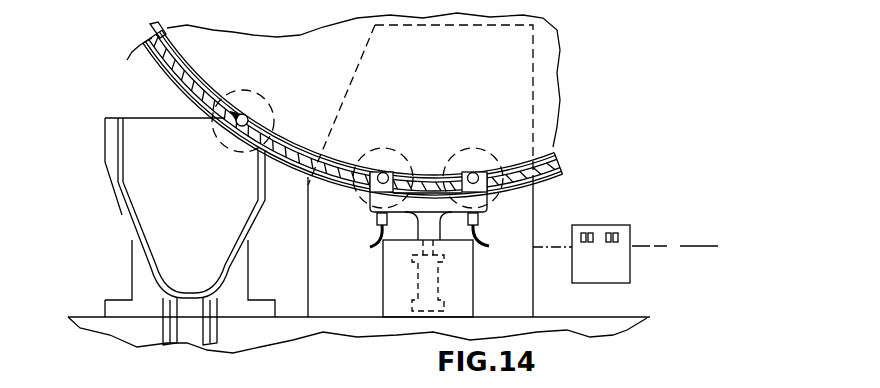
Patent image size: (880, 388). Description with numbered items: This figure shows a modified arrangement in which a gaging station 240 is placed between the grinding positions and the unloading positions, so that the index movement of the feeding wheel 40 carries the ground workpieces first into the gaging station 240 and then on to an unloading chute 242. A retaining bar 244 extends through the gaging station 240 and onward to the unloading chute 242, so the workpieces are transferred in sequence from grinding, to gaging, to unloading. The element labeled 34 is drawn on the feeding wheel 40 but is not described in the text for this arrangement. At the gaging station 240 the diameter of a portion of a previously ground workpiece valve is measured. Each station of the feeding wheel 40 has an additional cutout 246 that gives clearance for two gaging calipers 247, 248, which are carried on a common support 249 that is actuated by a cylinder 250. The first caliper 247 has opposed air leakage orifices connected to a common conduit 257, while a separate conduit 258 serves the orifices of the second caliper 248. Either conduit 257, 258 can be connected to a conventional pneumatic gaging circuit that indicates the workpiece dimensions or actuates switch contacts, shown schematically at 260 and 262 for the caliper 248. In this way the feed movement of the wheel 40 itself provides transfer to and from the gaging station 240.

The feeding wheel 40 is at (163, 38).
The guide wheel 34 is at (253, 112).
The unloading chute 242 is at (138, 140).
The retaining bar 244 is at (549, 183).
The cutout 246 is at (375, 167).
The gaging caliper 247 is at (379, 206).
The gaging caliper 248 is at (485, 205).
The common support 249 is at (437, 227).
The cylinder 250 is at (440, 283).
The conduit 257 is at (368, 243).
The conduit 258 is at (488, 237).
The gaging station 240 is at (372, 256).
The switch contacts 260 is at (586, 230).
The switch contacts 262 is at (613, 224).